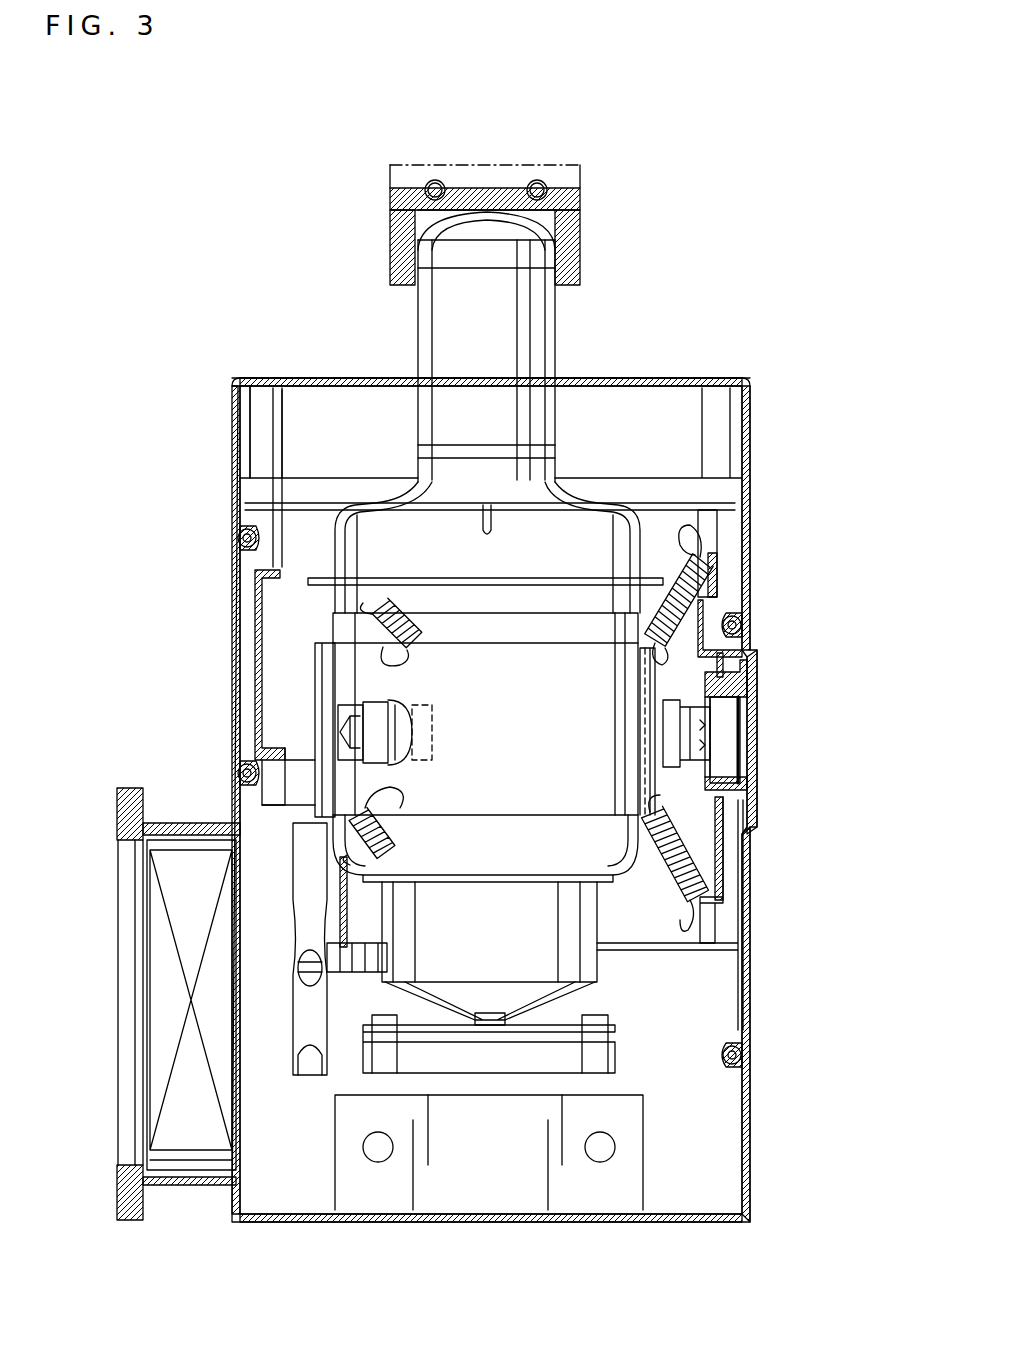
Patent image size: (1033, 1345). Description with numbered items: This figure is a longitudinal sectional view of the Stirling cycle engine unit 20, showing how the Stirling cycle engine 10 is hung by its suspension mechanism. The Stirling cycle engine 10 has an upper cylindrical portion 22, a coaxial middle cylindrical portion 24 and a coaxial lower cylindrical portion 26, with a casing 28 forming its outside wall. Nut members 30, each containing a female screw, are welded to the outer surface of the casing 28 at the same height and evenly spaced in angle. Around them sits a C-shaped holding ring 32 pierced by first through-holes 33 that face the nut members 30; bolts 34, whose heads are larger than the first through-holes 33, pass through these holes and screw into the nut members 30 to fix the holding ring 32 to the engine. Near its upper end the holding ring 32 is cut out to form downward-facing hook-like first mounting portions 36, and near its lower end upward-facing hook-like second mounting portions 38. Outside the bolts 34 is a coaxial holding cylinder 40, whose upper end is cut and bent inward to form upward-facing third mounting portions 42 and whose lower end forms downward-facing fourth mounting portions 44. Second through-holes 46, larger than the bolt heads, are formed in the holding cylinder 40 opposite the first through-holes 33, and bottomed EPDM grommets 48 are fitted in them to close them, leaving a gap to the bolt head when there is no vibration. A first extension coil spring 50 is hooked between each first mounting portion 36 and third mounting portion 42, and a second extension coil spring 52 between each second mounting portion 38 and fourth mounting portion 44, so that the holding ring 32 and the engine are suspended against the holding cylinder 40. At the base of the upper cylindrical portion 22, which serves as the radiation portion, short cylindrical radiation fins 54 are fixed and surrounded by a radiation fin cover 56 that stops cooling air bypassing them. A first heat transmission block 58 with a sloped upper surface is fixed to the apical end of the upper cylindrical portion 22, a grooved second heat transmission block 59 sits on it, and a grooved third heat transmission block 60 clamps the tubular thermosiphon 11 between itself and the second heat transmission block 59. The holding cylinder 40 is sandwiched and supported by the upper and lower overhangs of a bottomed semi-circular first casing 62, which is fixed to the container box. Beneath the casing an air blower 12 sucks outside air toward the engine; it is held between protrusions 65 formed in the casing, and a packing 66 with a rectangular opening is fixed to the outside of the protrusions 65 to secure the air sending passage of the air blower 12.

The Stirling cycle engine 10 is at (513, 498).
The thermosiphon 11 is at (437, 186).
The air blower 12 is at (190, 1122).
The Stirling cycle engine unit 20 is at (745, 205).
The upper cylindrical portion 22 is at (520, 343).
The middle cylindrical portion 24 is at (545, 567).
The lower cylindrical portion 26 is at (495, 940).
The casing 28 is at (568, 530).
The nut member 30 is at (387, 687).
The holding ring 32 is at (480, 713).
The first through-hole 33 is at (663, 727).
The bolt 34 is at (350, 737).
The first mounting portion 36 is at (393, 658).
The second mounting portion 38 is at (287, 753).
The holding cylinder 40 is at (257, 617).
The third mounting portion 42 is at (710, 545).
The fourth mounting portion 44 is at (713, 933).
The second through-hole 46 is at (722, 747).
The grommet 48 is at (753, 823).
The first extension coil spring 50 is at (377, 607).
The second extension coil spring 52 is at (350, 830).
The radiation fins 54 is at (345, 413).
The radiation fin cover 56 is at (253, 420).
The first heat transmission block 58 is at (582, 258).
The second heat transmission block 59 is at (395, 197).
The third heat transmission block 60 is at (405, 170).
The first casing 62 is at (755, 437).
The protrusion for the air blower 65 is at (165, 1182).
The packing 66 is at (118, 1195).